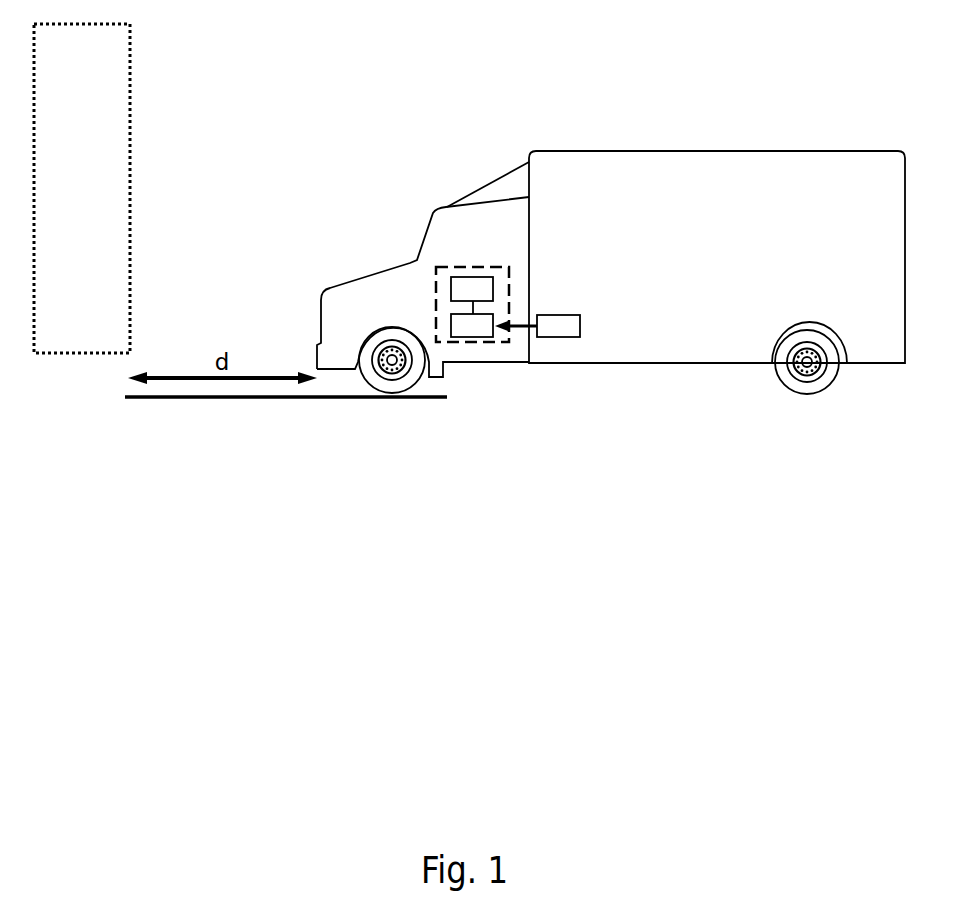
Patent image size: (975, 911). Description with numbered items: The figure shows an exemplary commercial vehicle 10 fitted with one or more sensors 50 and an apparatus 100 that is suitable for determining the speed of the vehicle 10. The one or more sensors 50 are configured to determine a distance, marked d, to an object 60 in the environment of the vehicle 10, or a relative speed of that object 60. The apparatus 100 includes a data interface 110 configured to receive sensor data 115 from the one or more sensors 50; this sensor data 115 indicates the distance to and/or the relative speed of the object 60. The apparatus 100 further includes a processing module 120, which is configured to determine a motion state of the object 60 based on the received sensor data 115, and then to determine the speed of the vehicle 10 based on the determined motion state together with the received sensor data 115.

The commercial vehicle 10 is at (673, 151).
The sensor 50 is at (558, 327).
The object 60 is at (65, 78).
The apparatus 100 is at (500, 267).
The data interface 110 is at (468, 337).
The sensor data 115 is at (515, 326).
The processing module 120 is at (477, 277).